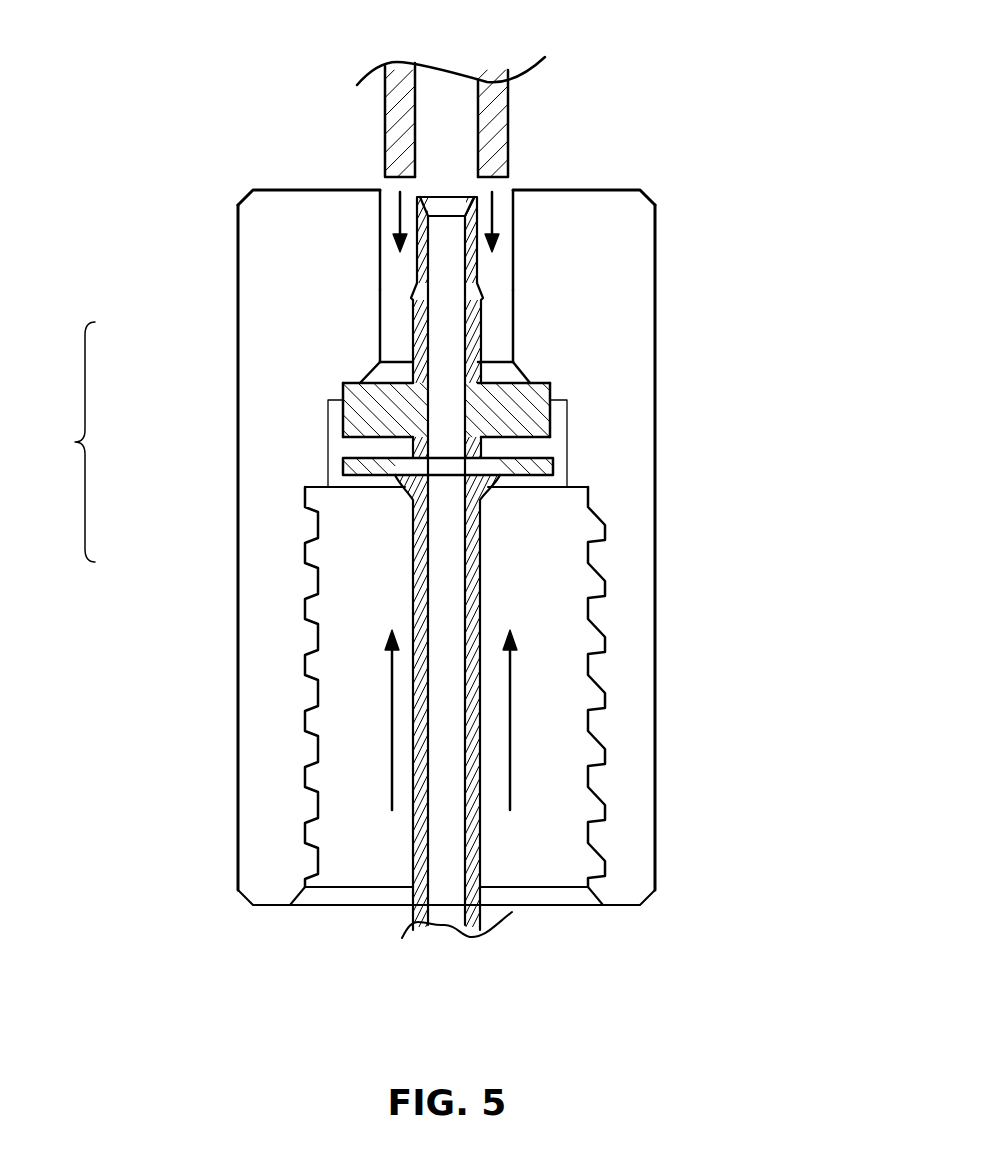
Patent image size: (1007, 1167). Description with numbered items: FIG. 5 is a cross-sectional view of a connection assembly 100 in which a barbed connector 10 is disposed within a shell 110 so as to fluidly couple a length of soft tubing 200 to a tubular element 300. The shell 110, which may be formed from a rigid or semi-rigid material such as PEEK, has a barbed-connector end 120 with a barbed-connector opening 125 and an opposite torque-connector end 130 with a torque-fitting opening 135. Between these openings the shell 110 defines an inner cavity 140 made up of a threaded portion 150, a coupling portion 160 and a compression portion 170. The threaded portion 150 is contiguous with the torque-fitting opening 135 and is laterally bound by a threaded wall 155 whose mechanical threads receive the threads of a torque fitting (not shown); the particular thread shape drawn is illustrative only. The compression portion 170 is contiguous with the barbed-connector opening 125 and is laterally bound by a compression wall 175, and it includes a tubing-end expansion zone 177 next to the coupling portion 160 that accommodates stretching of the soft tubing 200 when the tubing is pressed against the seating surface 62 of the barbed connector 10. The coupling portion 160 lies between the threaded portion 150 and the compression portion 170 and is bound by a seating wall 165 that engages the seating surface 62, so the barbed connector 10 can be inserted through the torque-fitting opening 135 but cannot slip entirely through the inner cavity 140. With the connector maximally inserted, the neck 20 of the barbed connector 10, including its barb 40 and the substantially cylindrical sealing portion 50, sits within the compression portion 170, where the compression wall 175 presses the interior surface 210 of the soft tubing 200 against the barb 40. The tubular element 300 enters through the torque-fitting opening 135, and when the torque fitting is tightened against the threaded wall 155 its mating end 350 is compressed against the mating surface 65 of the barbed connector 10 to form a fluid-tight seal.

The barbed connector 10 is at (565, 413).
The neck 20 is at (415, 322).
The barb 40 is at (483, 292).
The substantially cylindrical sealing portion 50 is at (413, 263).
The seating surface 62 is at (540, 381).
The mating surface 65 is at (527, 437).
The connection assembly 100 is at (518, 460).
The shell 110 is at (657, 718).
The barbed-connector end 120 is at (285, 188).
The barbed-connector opening 125 is at (385, 190).
The torque-connector end 130 is at (627, 905).
The torque-fitting opening 135 is at (367, 890).
The inner cavity 140 is at (53, 442).
The threaded portion 150 is at (360, 515).
The threaded wall 155 is at (305, 632).
The coupling portion 160 is at (340, 441).
The seating wall 165 is at (548, 388).
The compression portion 170 is at (400, 335).
The compression wall 175 is at (380, 288).
The tubing-end expansion zone 177 is at (507, 370).
The soft tubing 200 is at (508, 113).
The interior surface 210 is at (475, 112).
The tubular element 300 is at (413, 818).
The mating end 350 is at (553, 468).